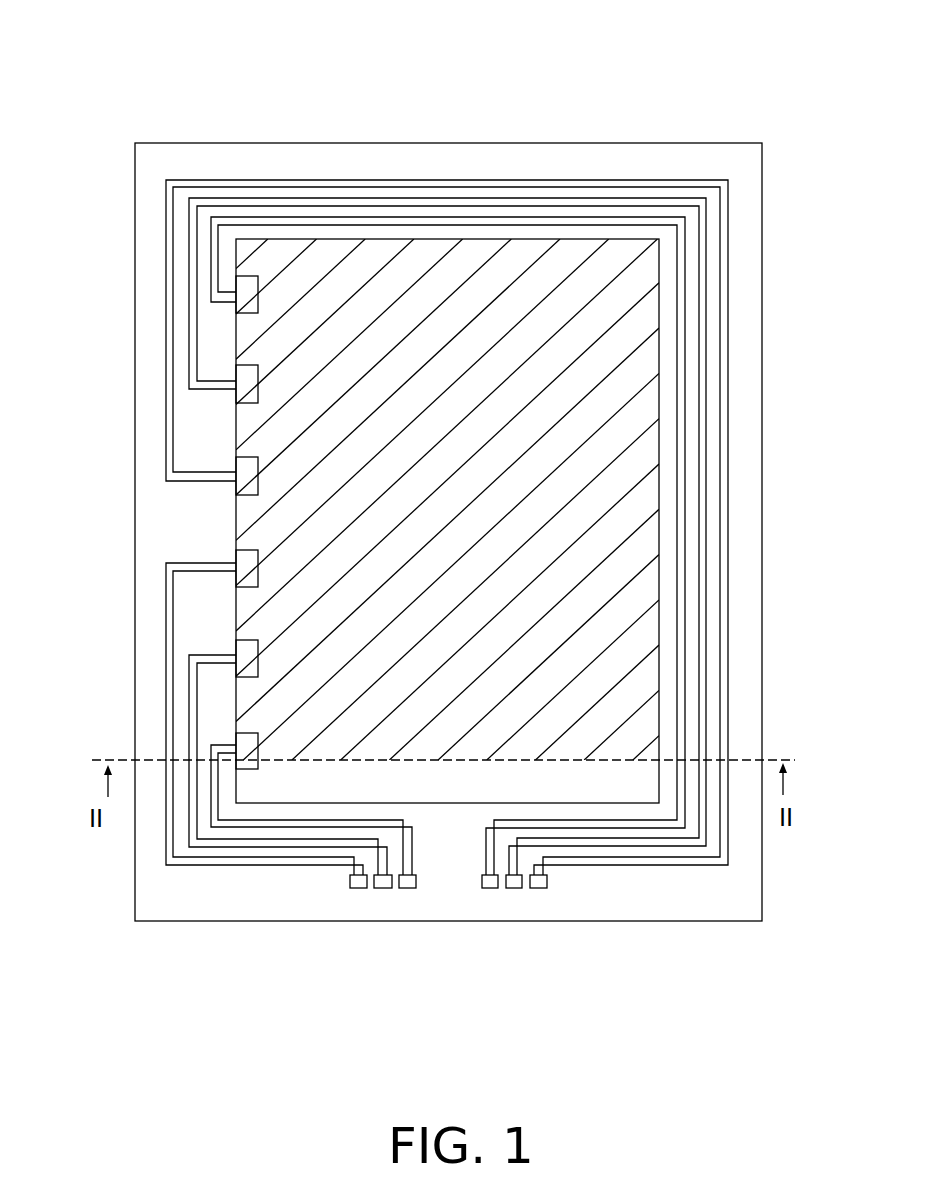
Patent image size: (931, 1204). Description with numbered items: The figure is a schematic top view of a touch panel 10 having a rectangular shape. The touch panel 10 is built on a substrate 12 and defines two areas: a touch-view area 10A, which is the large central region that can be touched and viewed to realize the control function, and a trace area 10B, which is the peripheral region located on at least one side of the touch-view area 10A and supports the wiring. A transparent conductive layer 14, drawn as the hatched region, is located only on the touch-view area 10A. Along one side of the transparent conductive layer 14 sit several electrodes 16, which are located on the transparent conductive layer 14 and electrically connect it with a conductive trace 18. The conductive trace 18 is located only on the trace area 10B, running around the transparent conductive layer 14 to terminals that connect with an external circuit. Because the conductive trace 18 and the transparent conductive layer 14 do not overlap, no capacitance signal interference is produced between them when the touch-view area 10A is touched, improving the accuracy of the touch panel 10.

The touch panel 10 is at (230, 70).
The touch-view area 10A is at (358, 448).
The trace area 10B is at (447, 552).
The substrate 12 is at (170, 508).
The transparent conductive layer 14 is at (495, 282).
The electrode 16 is at (245, 300).
The conductive trace 18 is at (370, 220).